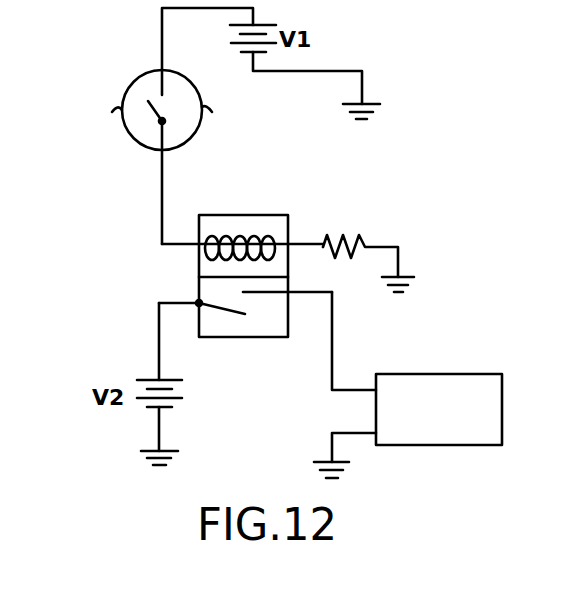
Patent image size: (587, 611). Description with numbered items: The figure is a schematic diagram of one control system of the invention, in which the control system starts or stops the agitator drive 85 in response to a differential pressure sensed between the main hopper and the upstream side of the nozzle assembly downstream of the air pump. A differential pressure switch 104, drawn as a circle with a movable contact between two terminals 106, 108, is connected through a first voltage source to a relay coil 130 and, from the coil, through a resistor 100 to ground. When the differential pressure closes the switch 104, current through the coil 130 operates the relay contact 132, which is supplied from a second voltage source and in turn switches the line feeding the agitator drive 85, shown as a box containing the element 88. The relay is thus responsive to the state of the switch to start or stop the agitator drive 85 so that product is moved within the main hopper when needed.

The switch 104 is at (144, 70).
The switch terminal 106 is at (212, 112).
The switch terminal 108 is at (112, 112).
The relay coil 130 is at (256, 212).
The relay contact 132 is at (230, 316).
The resistor 100 is at (352, 224).
The agitator drive 85 is at (455, 358).
The processor 88 is at (452, 421).